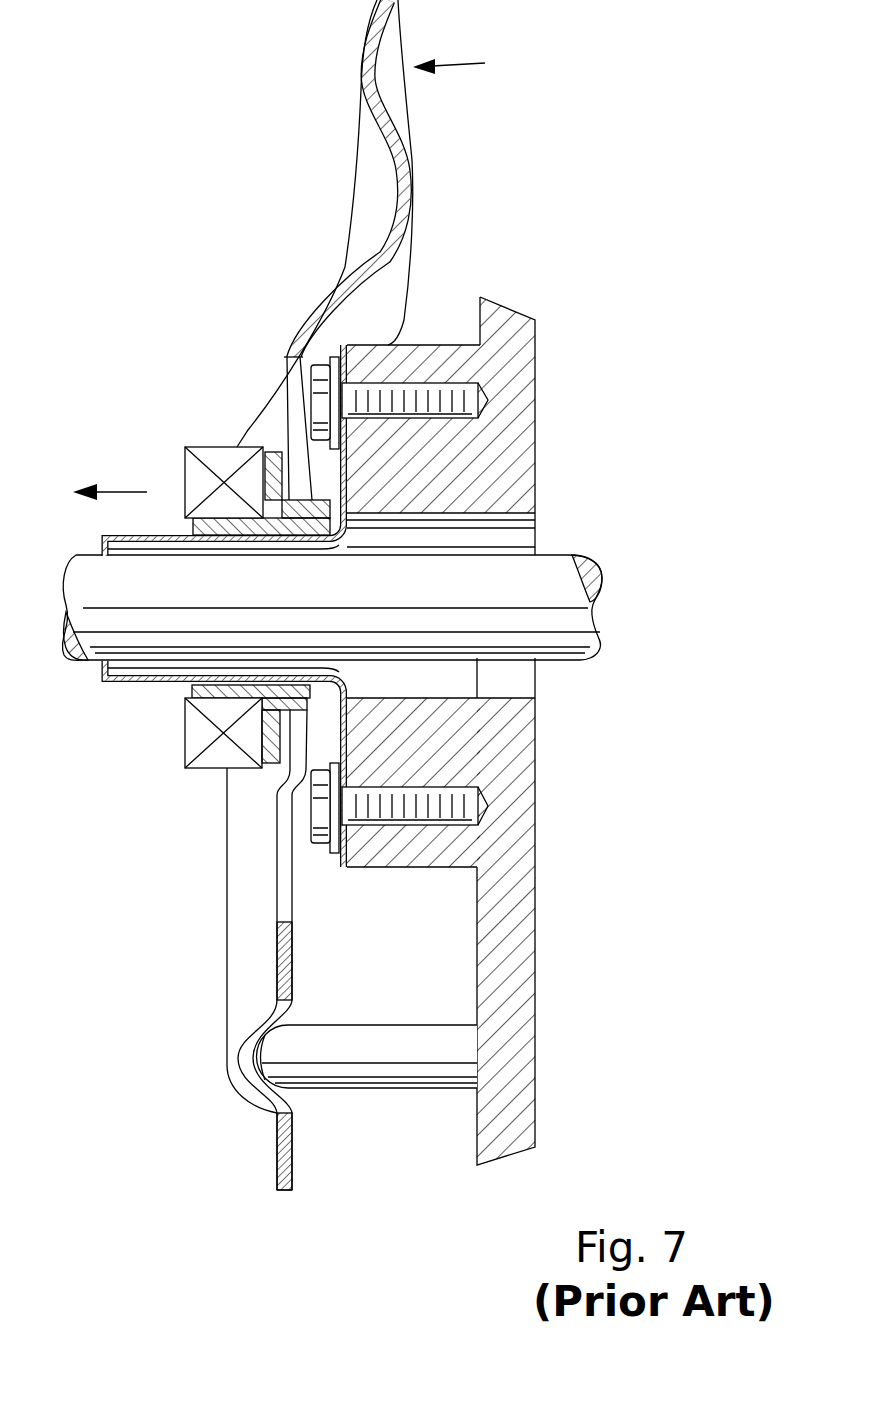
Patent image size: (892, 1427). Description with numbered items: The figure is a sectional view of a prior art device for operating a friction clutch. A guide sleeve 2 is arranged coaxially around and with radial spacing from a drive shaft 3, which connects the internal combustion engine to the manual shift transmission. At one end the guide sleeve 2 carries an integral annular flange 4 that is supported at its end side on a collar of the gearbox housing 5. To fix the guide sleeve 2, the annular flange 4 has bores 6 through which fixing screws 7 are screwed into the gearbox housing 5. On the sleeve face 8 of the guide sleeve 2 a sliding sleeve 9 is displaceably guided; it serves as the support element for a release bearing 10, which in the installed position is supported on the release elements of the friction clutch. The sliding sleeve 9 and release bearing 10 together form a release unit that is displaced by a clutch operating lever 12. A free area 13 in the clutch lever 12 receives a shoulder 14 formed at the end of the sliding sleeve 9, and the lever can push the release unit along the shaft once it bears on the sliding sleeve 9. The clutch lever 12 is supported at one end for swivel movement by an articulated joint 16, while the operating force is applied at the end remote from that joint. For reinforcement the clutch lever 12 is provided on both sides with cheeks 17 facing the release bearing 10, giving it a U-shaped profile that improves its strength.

The guide sleeve 2 is at (122, 536).
The drive shaft 3 is at (500, 592).
The annular flange 4 is at (352, 742).
The gearbox housing 5 is at (517, 901).
The bores 6 is at (349, 382).
The fixing screws 7 is at (323, 368).
The sleeve face 8 is at (134, 683).
The sliding sleeve 9 is at (190, 690).
The release bearing 10 is at (207, 760).
The clutch operating lever 12 is at (410, 175).
The free area 13 is at (280, 898).
The shoulder 14 is at (346, 515).
The articulated joint 16 is at (308, 1101).
The cheeks 17 is at (242, 986).